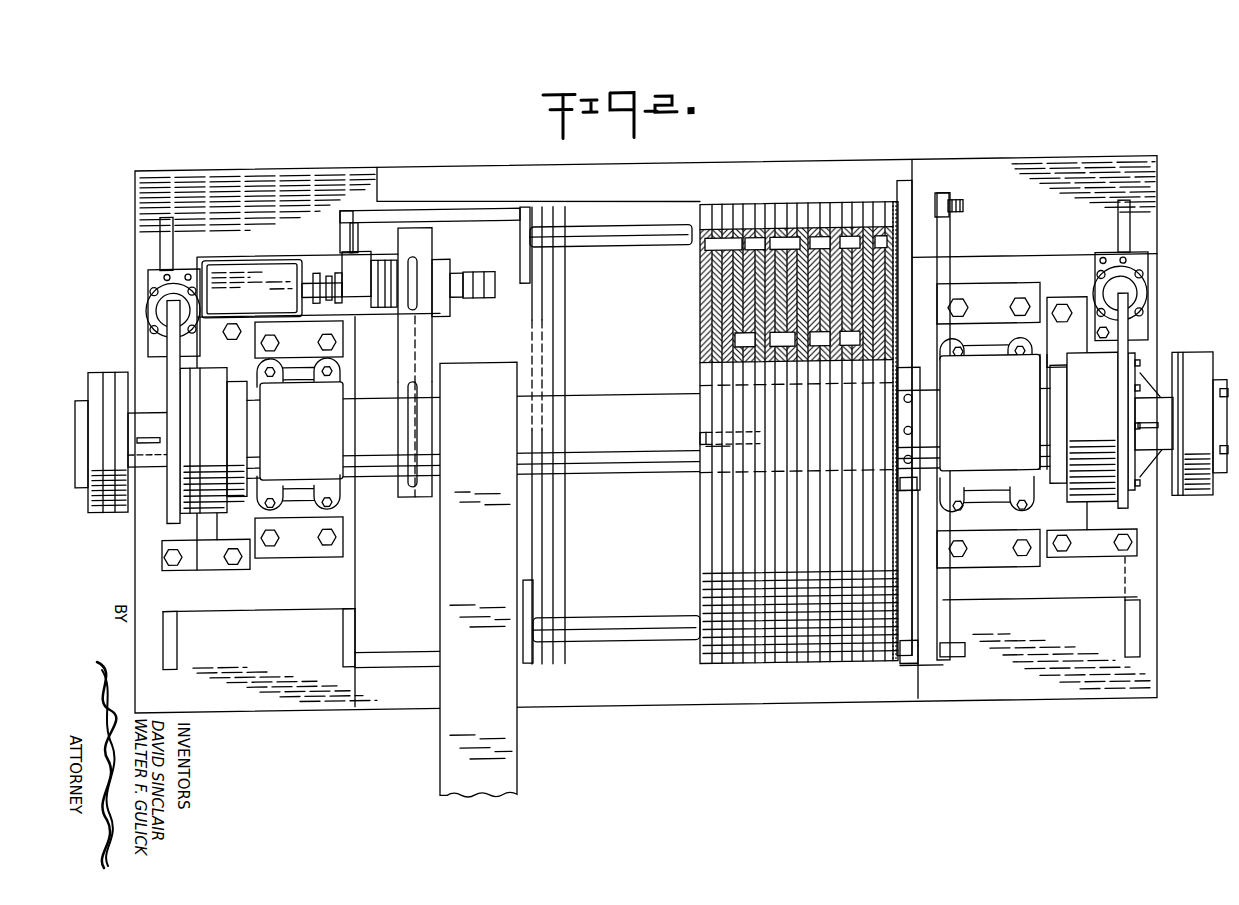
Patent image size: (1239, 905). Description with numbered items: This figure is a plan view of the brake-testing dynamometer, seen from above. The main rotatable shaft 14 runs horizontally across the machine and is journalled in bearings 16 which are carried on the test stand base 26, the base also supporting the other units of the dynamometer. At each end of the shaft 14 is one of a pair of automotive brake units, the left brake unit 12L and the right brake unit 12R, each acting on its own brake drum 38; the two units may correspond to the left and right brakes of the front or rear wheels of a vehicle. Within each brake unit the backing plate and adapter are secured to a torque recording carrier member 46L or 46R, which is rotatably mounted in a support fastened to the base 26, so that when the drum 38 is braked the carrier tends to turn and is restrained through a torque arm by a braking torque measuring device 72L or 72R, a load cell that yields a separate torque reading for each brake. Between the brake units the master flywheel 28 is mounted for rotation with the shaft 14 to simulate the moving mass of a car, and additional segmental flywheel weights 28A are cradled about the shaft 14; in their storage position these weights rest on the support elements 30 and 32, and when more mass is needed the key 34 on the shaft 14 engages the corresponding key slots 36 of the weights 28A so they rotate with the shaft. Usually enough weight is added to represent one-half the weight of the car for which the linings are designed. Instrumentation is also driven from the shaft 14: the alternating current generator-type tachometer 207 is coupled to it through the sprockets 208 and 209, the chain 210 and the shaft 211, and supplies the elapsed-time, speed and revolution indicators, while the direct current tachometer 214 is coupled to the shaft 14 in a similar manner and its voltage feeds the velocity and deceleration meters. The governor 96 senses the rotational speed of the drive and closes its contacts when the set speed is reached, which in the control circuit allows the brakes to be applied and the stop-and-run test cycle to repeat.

The left brake unit 12L is at (168, 510).
The right brake unit 12R is at (1143, 489).
The shaft 14 is at (601, 450).
The bearings 16 is at (311, 443).
The test stand base 26 is at (165, 571).
The master flywheel 28 is at (883, 425).
The segmental flywheel weights 28A is at (892, 210).
The support element 30 is at (656, 627).
The support element 32 is at (672, 244).
The key 34 is at (700, 446).
The key slots 36 is at (715, 448).
The brake drum 38 is at (105, 509).
The left torque recording carrier member 46L is at (162, 342).
The right torque recording carrier member 46R is at (1130, 345).
The left braking torque measuring device 72L is at (153, 309).
The right braking torque measuring device 72R is at (1138, 303).
The governor 96 is at (355, 282).
The alternating current generator-type tachometer 207 is at (474, 300).
The sprocket 208 is at (424, 447).
The sprocket 209 is at (414, 268).
The chain 210 is at (426, 354).
The shaft 211 is at (318, 283).
The direct current tachometer 214 is at (223, 275).